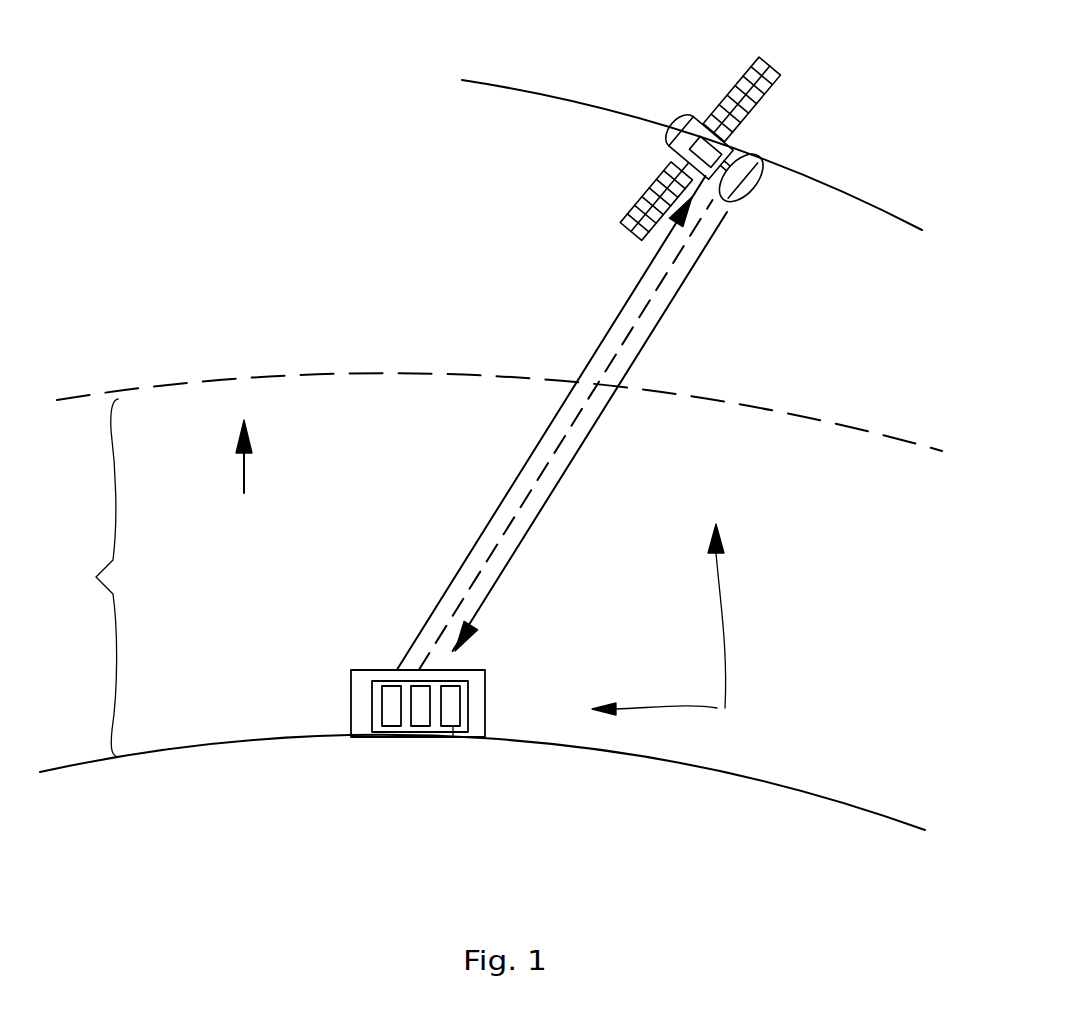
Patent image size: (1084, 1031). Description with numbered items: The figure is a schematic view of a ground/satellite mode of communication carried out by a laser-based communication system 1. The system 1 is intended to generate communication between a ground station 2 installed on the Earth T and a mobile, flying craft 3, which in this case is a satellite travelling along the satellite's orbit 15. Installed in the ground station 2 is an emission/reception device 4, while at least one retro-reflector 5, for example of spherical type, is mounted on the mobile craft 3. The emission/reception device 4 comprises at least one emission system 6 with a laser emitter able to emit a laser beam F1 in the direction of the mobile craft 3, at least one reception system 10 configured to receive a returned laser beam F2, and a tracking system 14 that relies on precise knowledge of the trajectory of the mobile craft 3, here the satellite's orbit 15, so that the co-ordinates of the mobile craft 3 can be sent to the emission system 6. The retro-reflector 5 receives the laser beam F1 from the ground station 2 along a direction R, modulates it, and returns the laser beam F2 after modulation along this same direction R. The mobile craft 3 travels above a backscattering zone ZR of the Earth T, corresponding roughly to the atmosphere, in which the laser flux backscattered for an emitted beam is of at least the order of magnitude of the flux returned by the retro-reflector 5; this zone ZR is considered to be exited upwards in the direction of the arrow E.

The system 1 is at (662, 630).
The ground station 2 is at (340, 640).
The mobile craft 3 is at (679, 86).
The emission/reception device 4 is at (405, 737).
The retro-reflector 5 is at (733, 141).
The emission system 6 is at (388, 737).
The reception system 10 is at (418, 737).
The tracking system 14 is at (453, 737).
The satellite's orbit 15 is at (828, 185).
The arrow E is at (247, 463).
The laser beam F1 is at (535, 443).
The returned laser beam F2 is at (592, 427).
The direction R is at (535, 480).
The Earth T is at (229, 744).
The backscattering zone ZR is at (499, 565).